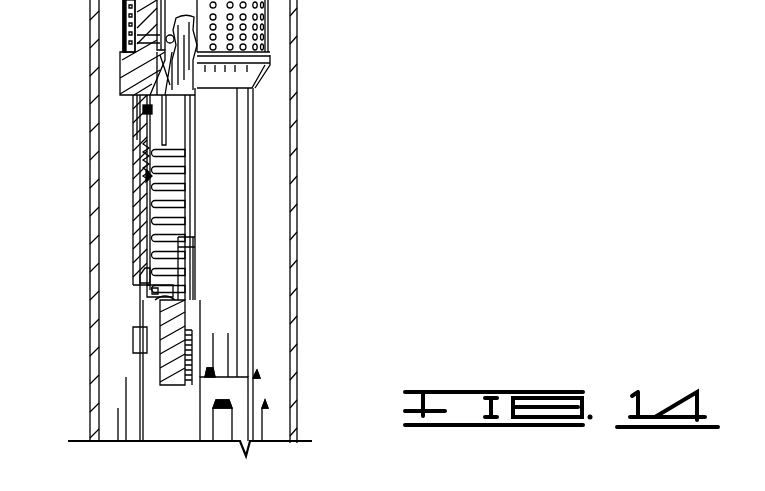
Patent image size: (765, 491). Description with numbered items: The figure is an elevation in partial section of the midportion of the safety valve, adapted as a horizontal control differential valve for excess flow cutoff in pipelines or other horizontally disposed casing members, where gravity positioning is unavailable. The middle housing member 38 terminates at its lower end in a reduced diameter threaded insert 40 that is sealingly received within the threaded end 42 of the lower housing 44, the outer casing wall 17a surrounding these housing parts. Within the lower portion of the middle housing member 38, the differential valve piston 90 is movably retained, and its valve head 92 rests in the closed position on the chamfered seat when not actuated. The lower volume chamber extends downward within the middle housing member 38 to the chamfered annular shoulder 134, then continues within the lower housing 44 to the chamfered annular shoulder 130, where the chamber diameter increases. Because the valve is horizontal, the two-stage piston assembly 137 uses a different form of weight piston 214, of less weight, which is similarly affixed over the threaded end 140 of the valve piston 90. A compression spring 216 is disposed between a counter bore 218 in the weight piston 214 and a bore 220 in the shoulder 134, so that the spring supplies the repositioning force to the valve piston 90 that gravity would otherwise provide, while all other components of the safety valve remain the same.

The housing wall 17a is at (93, 190).
The middle housing member 38 is at (150, 62).
The reduced diameter threaded insert 40 is at (145, 116).
The threaded end 42 is at (137, 130).
The lower housing 44 is at (138, 232).
The differential valve piston 90 is at (193, 188).
The valve head 92 is at (186, 42).
The chamfered annular shoulder 130 is at (147, 278).
The chamfered annular shoulder 134 is at (145, 175).
The two-stage piston assembly 137 is at (122, 305).
The threaded end 140 is at (195, 362).
The weight piston 214 is at (178, 337).
The compression spring 216 is at (192, 237).
The counter bore 218 is at (150, 290).
The bore 220 is at (143, 146).